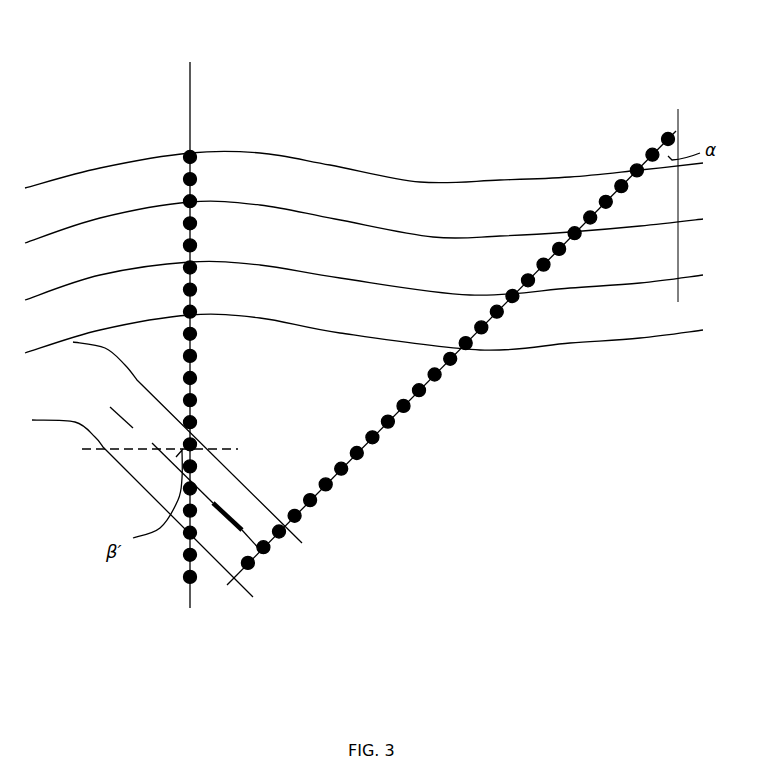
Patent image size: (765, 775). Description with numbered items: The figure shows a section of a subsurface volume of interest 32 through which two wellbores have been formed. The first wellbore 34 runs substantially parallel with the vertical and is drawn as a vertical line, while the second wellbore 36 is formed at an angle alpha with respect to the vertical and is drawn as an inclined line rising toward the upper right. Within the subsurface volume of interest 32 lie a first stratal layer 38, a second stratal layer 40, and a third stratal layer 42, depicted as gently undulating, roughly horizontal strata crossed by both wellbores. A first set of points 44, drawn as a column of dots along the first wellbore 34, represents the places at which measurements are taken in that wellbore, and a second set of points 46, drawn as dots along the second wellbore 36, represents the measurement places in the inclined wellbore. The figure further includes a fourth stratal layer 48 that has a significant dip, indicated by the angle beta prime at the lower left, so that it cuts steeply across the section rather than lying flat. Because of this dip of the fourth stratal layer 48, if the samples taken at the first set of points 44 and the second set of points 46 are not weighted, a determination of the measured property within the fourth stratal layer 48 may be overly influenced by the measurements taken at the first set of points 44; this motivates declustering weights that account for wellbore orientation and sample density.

The subsurface volume of interest 32 is at (399, 96).
The first wellbore 34 is at (190, 79).
The second wellbore 36 is at (680, 130).
The first stratal layer 38 is at (336, 220).
The second stratal layer 40 is at (336, 278).
The third stratal layer 42 is at (336, 334).
The first set of points 44 is at (194, 222).
The second set of points 46 is at (636, 172).
The fourth stratal layer 48 is at (300, 533).